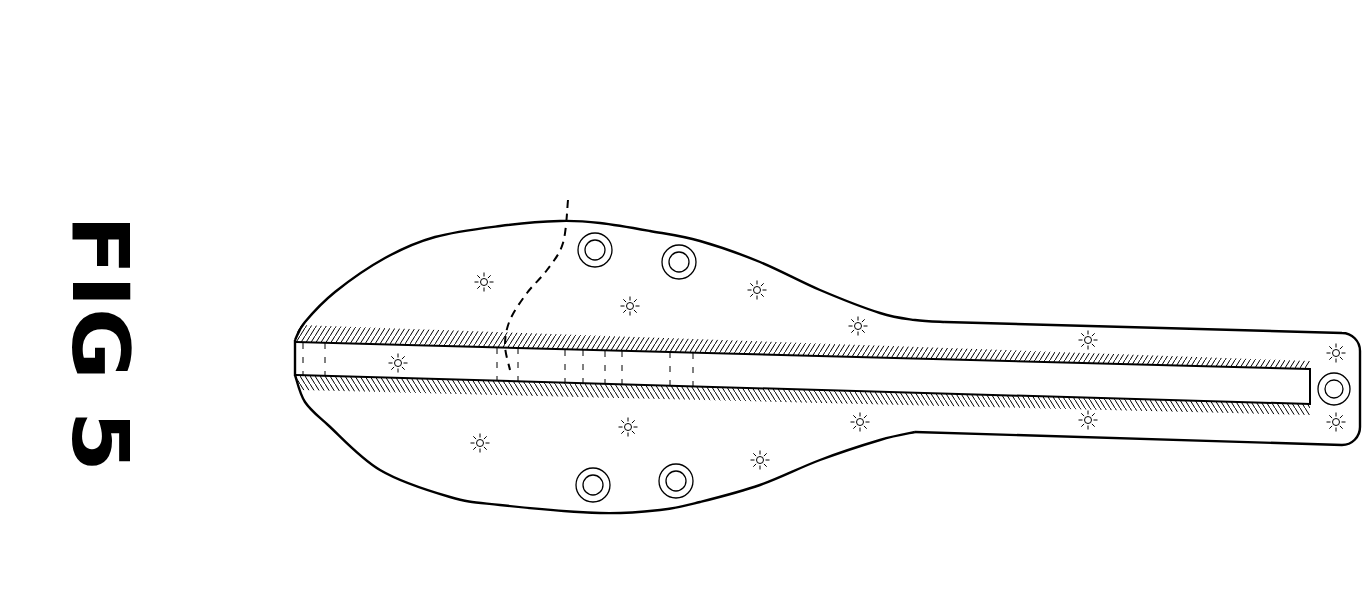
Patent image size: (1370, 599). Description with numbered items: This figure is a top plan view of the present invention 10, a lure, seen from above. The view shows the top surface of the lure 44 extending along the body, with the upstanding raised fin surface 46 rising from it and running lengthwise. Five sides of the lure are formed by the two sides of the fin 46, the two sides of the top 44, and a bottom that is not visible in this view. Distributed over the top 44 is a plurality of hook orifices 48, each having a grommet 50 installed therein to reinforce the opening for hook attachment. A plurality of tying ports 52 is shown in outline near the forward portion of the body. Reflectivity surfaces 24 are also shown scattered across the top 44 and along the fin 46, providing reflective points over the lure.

The present invention 10 is at (432, 237).
The reflectivity surfaces 24 is at (497, 277).
The top surface of the lure 44 is at (820, 313).
The upstanding raised fin surface 46 is at (972, 378).
The hook orifices 48 is at (680, 262).
The grommets 50 is at (667, 255).
The tying ports 52 is at (550, 261).